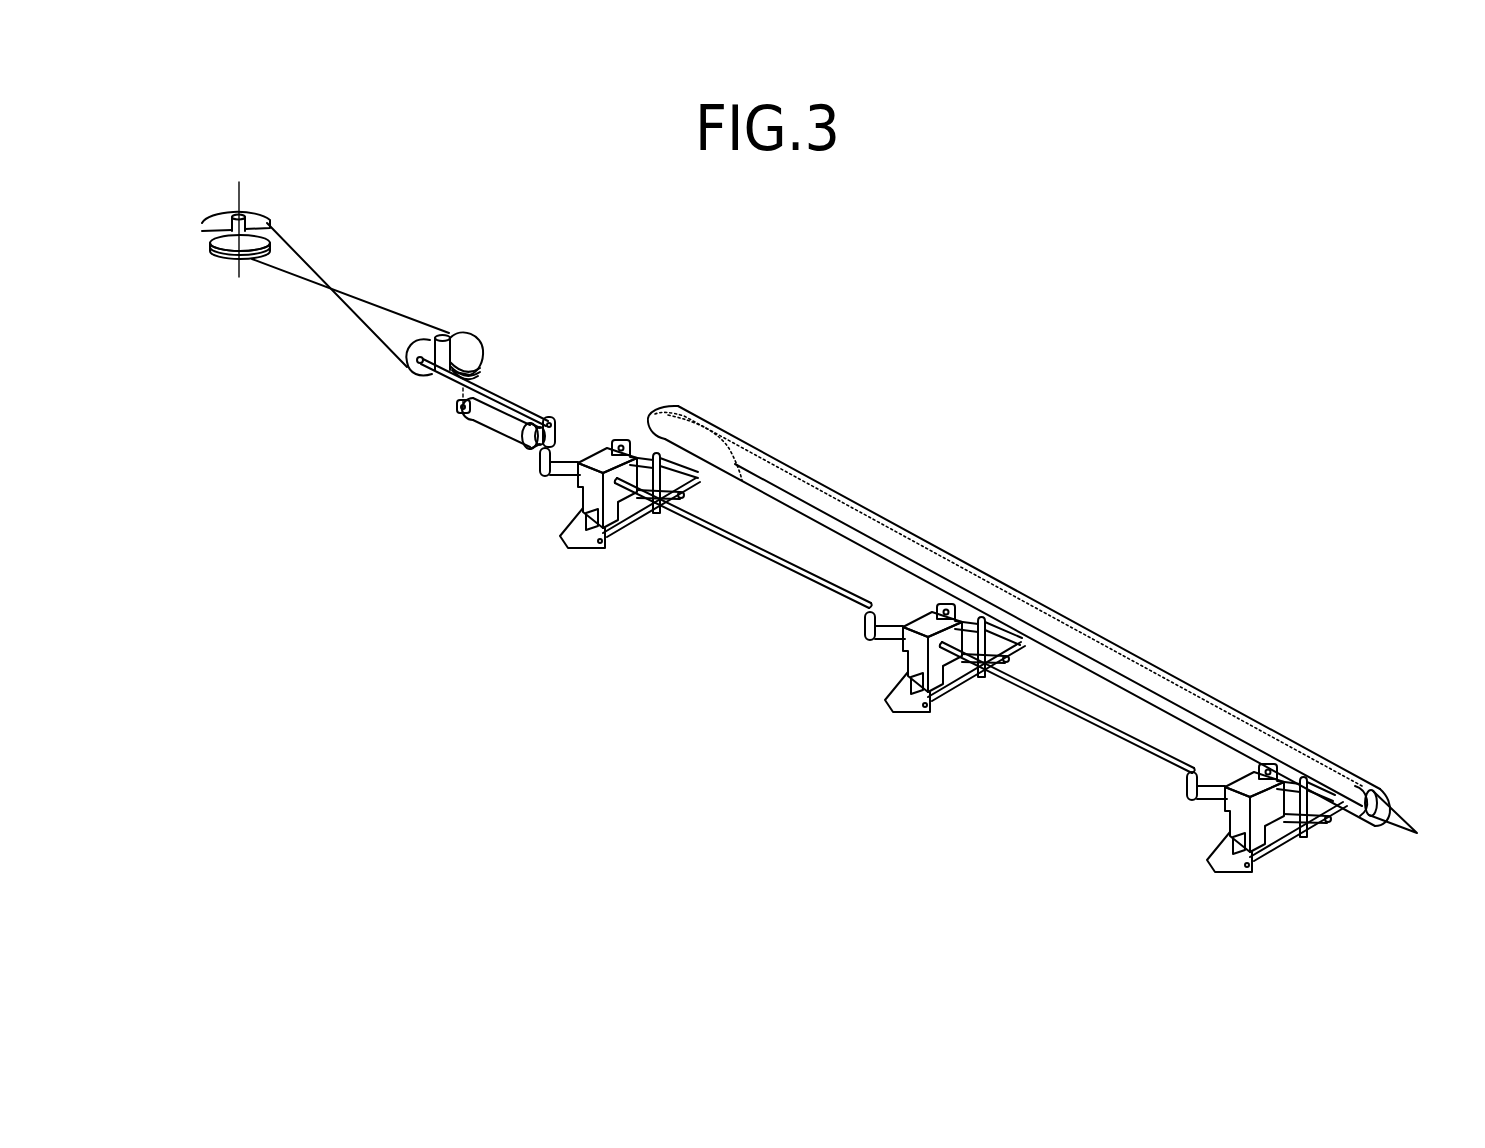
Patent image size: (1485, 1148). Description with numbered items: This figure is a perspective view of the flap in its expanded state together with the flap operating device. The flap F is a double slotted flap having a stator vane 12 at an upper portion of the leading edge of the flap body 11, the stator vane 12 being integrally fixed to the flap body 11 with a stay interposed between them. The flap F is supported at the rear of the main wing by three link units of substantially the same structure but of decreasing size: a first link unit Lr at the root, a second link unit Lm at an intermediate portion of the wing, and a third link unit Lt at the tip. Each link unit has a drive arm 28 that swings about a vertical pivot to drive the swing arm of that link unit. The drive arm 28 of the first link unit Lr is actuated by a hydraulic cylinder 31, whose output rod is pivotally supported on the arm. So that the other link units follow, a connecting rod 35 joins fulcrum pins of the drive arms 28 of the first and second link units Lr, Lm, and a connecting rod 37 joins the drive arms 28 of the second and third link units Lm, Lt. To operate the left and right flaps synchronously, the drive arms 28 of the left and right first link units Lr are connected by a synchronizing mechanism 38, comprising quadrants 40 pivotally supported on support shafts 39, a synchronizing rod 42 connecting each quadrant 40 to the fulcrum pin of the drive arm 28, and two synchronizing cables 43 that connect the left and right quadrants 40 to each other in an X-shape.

The flap body 11 is at (1394, 807).
The stator vane 12 is at (1281, 737).
The drive arm 28 is at (565, 478).
The hydraulic cylinder 31 is at (493, 425).
The connecting rod 35 is at (752, 551).
The connecting rod 37 is at (1079, 716).
The synchronizing mechanism 38 is at (318, 301).
The support shaft 39 is at (236, 213).
The quadrant 40 is at (253, 217).
The synchronizing rod 42 is at (493, 383).
The synchronizing cable 43 is at (383, 310).
The flap F is at (929, 522).
The first link unit Lr is at (644, 537).
The second link unit Lm is at (966, 698).
The third link unit Lt is at (1289, 852).